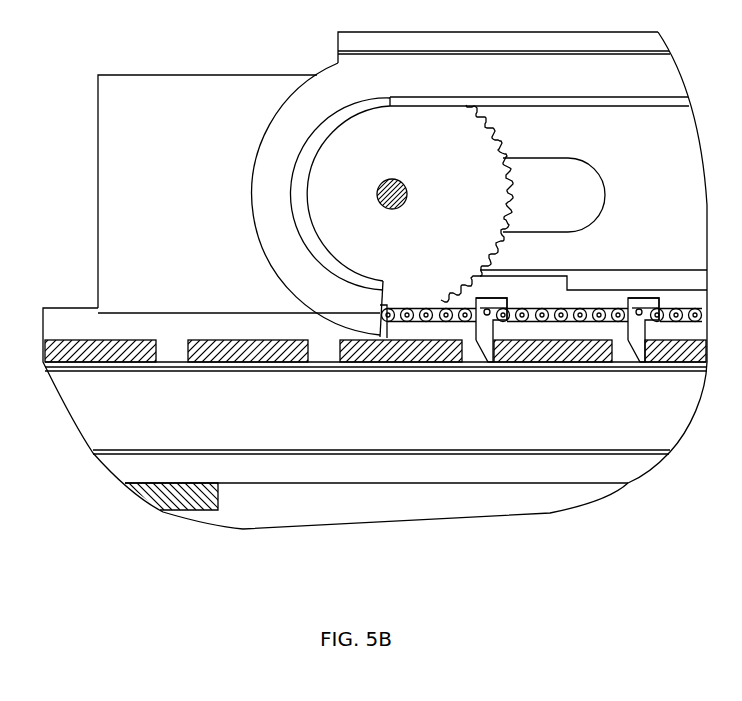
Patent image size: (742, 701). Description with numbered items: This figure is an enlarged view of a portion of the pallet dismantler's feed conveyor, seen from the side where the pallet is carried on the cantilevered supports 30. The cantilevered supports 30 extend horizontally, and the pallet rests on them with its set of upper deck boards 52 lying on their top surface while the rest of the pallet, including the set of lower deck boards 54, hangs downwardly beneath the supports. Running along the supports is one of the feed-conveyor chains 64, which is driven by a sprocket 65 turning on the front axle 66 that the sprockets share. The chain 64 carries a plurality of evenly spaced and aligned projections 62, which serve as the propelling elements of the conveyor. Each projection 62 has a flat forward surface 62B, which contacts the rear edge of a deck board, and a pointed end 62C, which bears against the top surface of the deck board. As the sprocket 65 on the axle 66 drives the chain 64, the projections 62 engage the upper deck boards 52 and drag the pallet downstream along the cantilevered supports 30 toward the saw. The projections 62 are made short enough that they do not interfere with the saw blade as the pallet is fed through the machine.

The cantilevered supports 30 is at (333, 422).
The upper deck boards 52 is at (379, 363).
The lower deck boards 54 is at (218, 498).
The projections 62 is at (468, 330).
The flat forward surface 62B is at (490, 329).
The pointed end 62C is at (485, 342).
The chains 64 is at (617, 297).
The sprockets 65 is at (500, 150).
The front axle 66 is at (392, 179).